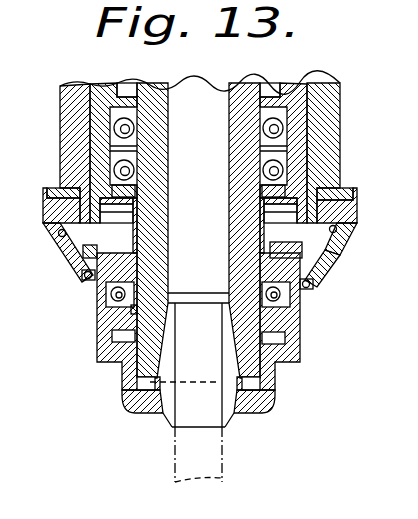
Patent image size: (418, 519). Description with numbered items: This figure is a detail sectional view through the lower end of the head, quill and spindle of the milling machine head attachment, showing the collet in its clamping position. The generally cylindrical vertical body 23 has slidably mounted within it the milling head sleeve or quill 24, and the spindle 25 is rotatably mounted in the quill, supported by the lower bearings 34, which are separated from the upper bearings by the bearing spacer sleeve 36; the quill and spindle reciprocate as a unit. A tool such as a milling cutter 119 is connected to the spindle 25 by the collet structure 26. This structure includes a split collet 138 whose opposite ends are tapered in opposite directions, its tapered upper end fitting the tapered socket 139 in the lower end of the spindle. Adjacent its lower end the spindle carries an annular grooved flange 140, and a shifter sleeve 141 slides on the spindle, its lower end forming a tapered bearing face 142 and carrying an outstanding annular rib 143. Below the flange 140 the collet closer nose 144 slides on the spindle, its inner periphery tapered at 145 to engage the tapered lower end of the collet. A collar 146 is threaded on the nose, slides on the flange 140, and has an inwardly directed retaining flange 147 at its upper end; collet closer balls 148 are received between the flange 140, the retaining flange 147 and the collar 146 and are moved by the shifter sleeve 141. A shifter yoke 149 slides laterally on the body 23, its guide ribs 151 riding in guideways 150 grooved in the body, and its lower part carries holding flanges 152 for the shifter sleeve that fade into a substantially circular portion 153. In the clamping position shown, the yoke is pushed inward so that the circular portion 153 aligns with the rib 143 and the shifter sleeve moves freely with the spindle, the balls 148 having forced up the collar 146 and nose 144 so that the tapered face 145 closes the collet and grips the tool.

The vertical body 23 is at (62, 128).
The milling head sleeve or quill 24 is at (60, 98).
The spindle 25 is at (162, 83).
The collet structure 26 is at (123, 402).
The lower bearings 34 is at (118, 130).
The bearing spacer sleeve 36 is at (137, 88).
The milling cutter 119 is at (170, 461).
The split collet 138 is at (243, 414).
The tapered socket 139 is at (262, 350).
The annular grooved flange 140 is at (283, 312).
The shifter sleeve 141 is at (332, 243).
The tapered bearing face 142 is at (98, 335).
The outstanding annular rib 143 is at (325, 272).
The collet closer nose 144 is at (267, 385).
The tapered inner periphery 145 is at (146, 412).
The collar 146 is at (100, 313).
The retaining flange 147 is at (100, 288).
The collet closer balls 148 is at (98, 300).
The shifter yoke 149 is at (62, 263).
The guideways 150 is at (62, 186).
The guide ribs 151 is at (48, 201).
The holding flanges 152 is at (62, 236).
The circular portion 153 is at (93, 252).